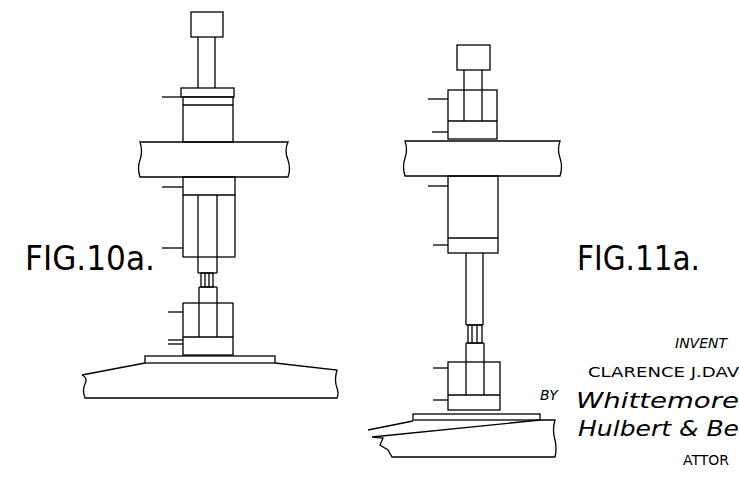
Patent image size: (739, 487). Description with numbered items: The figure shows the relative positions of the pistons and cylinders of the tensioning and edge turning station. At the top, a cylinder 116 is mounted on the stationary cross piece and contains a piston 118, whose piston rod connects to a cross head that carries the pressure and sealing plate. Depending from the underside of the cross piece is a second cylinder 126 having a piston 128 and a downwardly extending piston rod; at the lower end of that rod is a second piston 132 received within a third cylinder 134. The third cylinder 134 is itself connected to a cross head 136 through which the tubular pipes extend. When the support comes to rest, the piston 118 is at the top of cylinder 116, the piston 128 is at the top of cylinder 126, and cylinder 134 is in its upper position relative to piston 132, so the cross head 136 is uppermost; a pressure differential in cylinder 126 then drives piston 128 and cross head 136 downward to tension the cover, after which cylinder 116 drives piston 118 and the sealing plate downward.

In FIG. 10A, the cylinder 116 is at (183, 119).
In FIG. 11A, the cylinder 116 is at (493, 112).
In FIG. 10A, the piston 118 is at (222, 102).
In FIG. 11A, the piston 118 is at (465, 130).
In FIG. 10A, the second cylinder 126 is at (183, 218).
In FIG. 11A, the second cylinder 126 is at (458, 217).
In FIG. 10A, the piston 128 is at (228, 190).
In FIG. 11A, the piston 128 is at (492, 244).
In FIG. 10A, the second piston 132 is at (223, 343).
In FIG. 11A, the second piston 132 is at (490, 393).
In FIG. 10A, the third cylinder 134 is at (183, 324).
In FIG. 11A, the third cylinder 134 is at (500, 363).
In FIG. 10A, the cross head 136 is at (253, 392).
In FIG. 11A, the cross head 136 is at (387, 440).